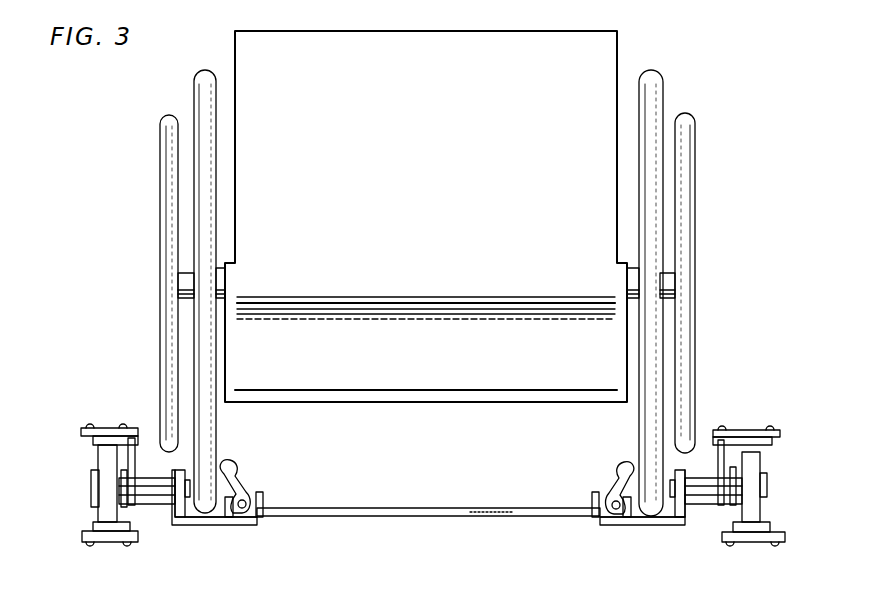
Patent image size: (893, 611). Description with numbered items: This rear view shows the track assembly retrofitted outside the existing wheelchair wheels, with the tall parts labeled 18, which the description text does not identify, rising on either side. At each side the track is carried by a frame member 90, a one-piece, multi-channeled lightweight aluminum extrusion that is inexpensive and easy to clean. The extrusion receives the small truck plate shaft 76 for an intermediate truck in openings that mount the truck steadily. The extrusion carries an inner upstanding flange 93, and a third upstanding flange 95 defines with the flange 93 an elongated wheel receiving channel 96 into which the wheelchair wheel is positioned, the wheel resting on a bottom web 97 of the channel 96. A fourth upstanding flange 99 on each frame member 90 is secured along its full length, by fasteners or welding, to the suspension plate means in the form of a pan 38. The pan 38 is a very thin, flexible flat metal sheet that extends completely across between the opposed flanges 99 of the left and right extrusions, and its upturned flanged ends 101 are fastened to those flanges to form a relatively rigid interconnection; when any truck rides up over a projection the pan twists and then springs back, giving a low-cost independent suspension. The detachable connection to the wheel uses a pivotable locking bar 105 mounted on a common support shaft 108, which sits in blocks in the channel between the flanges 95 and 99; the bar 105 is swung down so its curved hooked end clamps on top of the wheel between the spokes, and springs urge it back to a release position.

The support arm 18 is at (202, 212).
The pan 38 is at (371, 527).
The truck plate shaft 76 is at (160, 488).
The frame member 90 is at (239, 538).
The inner upstanding flange 93 is at (689, 497).
The third upstanding flange 95 is at (620, 520).
The wheel receiving channel 96 is at (226, 450).
The bottom web 97 is at (198, 523).
The fourth upstanding flange 99 is at (259, 490).
The upturned flanged end 101 is at (265, 495).
The locking bar 105 is at (230, 463).
The common support shaft 108 is at (247, 520).